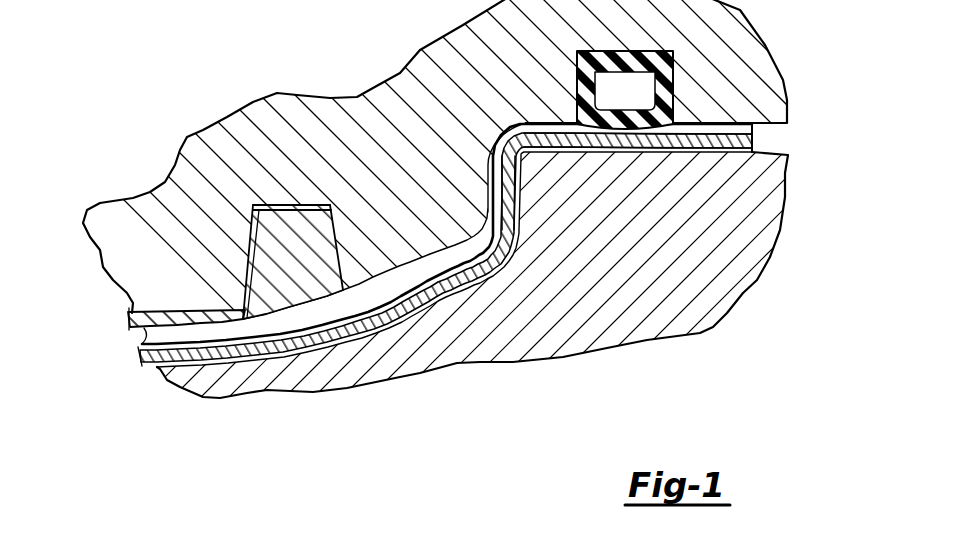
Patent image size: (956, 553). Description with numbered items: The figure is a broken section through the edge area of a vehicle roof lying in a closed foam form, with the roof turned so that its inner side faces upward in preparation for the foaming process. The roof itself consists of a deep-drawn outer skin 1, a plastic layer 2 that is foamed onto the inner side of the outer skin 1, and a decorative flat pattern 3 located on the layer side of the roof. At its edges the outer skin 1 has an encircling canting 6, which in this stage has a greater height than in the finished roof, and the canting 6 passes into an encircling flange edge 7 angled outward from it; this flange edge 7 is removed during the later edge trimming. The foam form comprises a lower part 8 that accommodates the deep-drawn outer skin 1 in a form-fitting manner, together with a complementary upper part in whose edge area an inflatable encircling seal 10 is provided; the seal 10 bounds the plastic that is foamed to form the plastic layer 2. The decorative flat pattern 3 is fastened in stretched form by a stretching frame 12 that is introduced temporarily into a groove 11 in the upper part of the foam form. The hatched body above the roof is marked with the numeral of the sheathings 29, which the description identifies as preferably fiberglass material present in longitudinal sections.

The outer skin 1 is at (148, 367).
The plastic layer 2 is at (438, 275).
The decorative flat pattern 3 is at (133, 330).
The canting 6 is at (508, 200).
The flange edge 7 is at (723, 137).
The lower part 8 is at (680, 327).
The inflatable encircling seal 10 is at (667, 75).
The groove 11 is at (283, 205).
The stretching frame 12 is at (277, 265).
The sheathings 29 is at (407, 300).